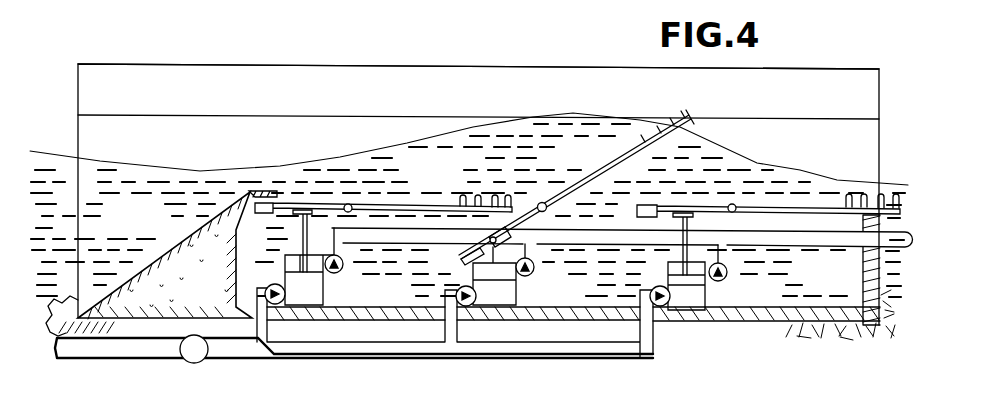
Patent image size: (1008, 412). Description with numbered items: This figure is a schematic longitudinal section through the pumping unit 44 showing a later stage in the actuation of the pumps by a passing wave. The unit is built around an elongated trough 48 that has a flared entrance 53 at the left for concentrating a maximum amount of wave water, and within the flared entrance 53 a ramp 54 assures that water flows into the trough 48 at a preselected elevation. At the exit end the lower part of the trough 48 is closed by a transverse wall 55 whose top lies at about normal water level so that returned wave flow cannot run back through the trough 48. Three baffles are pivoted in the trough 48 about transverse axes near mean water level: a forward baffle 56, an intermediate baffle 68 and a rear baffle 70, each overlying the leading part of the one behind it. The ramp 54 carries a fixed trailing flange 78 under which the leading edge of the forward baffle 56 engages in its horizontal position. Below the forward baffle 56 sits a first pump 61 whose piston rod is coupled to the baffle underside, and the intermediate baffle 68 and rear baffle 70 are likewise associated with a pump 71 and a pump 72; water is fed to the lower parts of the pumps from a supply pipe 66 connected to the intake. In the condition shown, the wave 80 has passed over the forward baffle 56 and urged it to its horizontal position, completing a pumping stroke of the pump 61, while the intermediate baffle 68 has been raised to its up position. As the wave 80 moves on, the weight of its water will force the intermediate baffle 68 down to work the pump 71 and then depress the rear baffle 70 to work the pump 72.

The pumping unit 44 is at (447, 60).
The trough 48 is at (577, 76).
The flared entrance 53 is at (122, 127).
The ramp 54 is at (175, 240).
The transverse wall 55 is at (864, 264).
The forward baffle 56 is at (407, 194).
The first pump 61 is at (325, 290).
The supply pipe 66 is at (135, 350).
The intermediate baffle 68 is at (613, 155).
The rear baffle 70 is at (790, 198).
The pump 71 is at (518, 290).
The pump 72 is at (706, 293).
The trailing flange 78 is at (265, 190).
The wave 80 is at (503, 128).